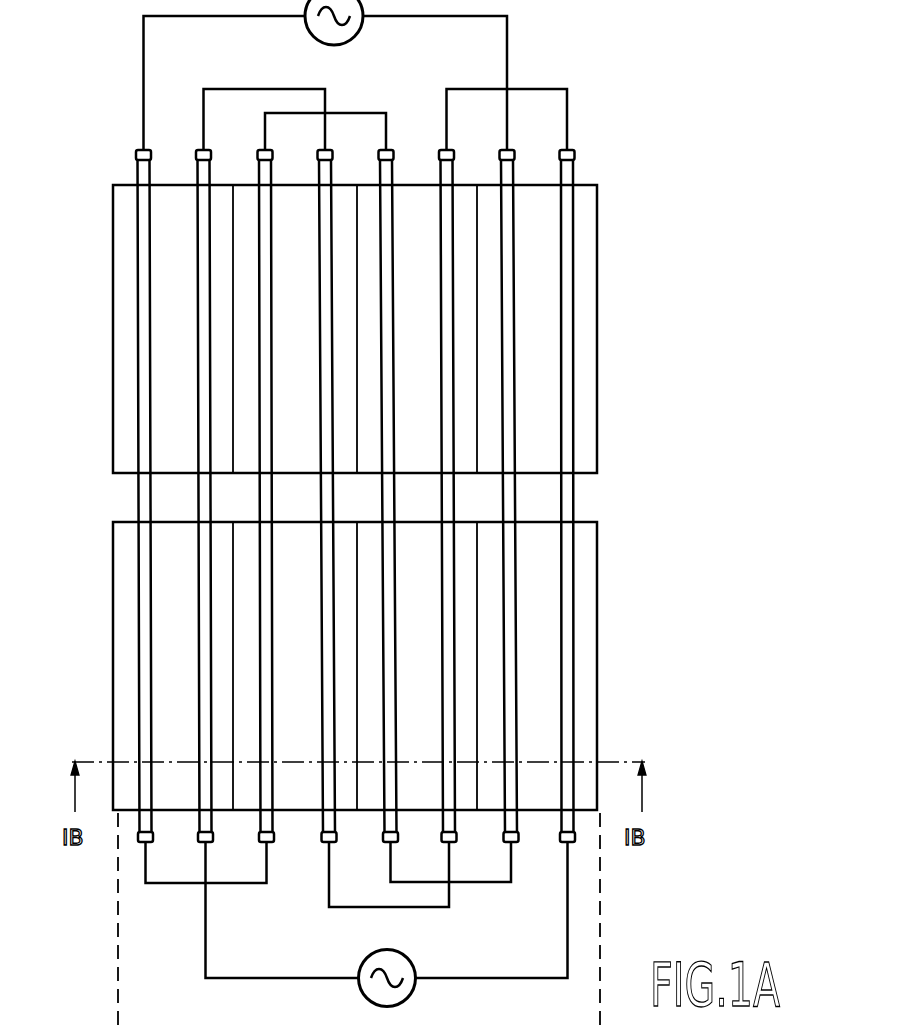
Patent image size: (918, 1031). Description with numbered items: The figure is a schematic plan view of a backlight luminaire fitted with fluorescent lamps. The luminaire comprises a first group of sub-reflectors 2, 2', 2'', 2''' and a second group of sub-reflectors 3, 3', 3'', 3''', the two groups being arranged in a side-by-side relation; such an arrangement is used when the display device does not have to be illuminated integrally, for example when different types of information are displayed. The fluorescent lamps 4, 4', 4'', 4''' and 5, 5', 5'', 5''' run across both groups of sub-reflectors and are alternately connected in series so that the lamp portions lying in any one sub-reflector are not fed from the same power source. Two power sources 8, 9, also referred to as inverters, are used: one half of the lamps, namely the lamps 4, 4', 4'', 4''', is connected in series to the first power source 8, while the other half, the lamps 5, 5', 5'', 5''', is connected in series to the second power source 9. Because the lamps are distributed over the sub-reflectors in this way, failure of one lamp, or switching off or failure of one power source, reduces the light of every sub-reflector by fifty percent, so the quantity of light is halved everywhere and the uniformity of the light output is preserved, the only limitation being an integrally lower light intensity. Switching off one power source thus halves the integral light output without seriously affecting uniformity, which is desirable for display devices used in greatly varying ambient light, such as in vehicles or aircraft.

The sub-reflector 2 is at (149, 329).
The sub-reflector 2' is at (211, 329).
The sub-reflector 2'' is at (512, 329).
The sub-reflector 2''' is at (575, 329).
The sub-reflector 3 is at (149, 666).
The sub-reflector 3' is at (211, 666).
The sub-reflector 3'' is at (512, 666).
The sub-reflector 3''' is at (575, 666).
The fluorescent lamp 4 is at (109, 496).
The fluorescent lamp 4' is at (170, 496).
The fluorescent lamp 4'' is at (523, 496).
The fluorescent lamp 4''' is at (587, 496).
The fluorescent lamp 5 is at (139, 496).
The fluorescent lamp 5' is at (201, 496).
The fluorescent lamp 5'' is at (553, 496).
The fluorescent lamp 5''' is at (617, 496).
The power source 8 is at (312, 34).
The power source 9 is at (412, 990).